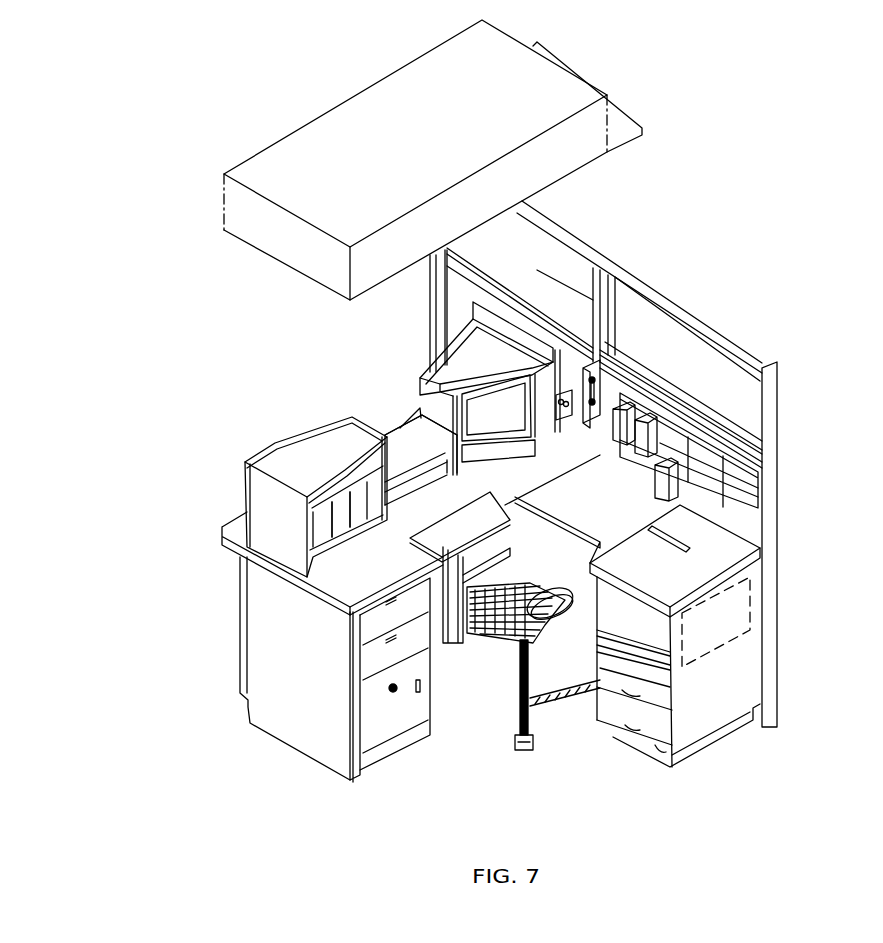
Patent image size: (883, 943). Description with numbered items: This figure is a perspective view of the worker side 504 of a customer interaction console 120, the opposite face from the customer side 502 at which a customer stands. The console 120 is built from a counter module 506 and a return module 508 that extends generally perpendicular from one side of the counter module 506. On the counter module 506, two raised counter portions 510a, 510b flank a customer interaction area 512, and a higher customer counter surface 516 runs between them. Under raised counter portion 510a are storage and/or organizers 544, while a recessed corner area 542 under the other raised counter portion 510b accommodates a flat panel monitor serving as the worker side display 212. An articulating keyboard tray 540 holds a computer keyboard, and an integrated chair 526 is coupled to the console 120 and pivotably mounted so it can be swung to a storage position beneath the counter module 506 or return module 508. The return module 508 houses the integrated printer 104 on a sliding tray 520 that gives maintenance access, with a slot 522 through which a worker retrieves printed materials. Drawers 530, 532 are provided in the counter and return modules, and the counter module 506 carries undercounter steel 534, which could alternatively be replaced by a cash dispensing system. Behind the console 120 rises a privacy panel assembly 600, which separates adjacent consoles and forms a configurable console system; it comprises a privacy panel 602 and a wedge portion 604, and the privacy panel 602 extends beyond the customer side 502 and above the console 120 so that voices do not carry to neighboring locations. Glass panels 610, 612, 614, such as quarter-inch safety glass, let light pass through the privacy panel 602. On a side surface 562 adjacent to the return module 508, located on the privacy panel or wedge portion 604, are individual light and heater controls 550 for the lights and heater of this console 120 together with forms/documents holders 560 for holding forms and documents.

The customer interaction console 120 is at (144, 372).
The customer side 502 is at (301, 372).
The worker side 504 is at (504, 761).
The privacy panel assembly 600 is at (676, 248).
The glass panel 614 is at (458, 288).
The glass panel 612 is at (508, 242).
The wedge portion 604 is at (538, 280).
The privacy panel 602 is at (722, 332).
The glass panel 610 is at (735, 410).
The side surface 562 is at (745, 493).
The forms/documents holders 560 is at (657, 495).
The recessed corner area 542 is at (551, 426).
The light and heater controls 550 is at (565, 418).
The raised counter portion 510b is at (478, 330).
The worker side display 212 is at (480, 437).
The customer interaction area 512 is at (392, 414).
The higher customer counter surface 516 is at (398, 426).
The raised counter portion 510a is at (255, 487).
The storage and/or organizers 544 is at (325, 548).
The counter module 506 is at (274, 642).
The undercounter steel 534 is at (372, 712).
The articulating keyboard tray 540 is at (497, 522).
The chair 526 is at (512, 650).
The return module 508 is at (730, 553).
The slot 522 is at (682, 550).
The sliding tray 520 is at (612, 595).
The printer 104 is at (742, 612).
The drawer 532 is at (652, 710).
The drawer 530 is at (660, 745).